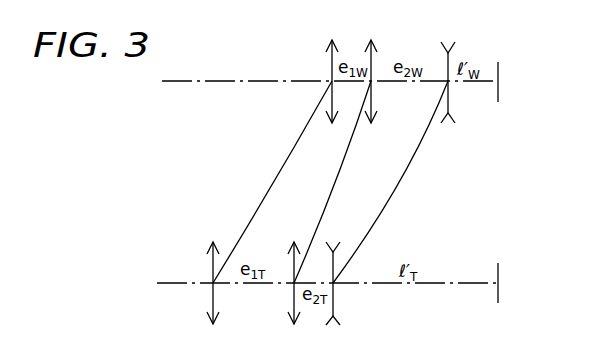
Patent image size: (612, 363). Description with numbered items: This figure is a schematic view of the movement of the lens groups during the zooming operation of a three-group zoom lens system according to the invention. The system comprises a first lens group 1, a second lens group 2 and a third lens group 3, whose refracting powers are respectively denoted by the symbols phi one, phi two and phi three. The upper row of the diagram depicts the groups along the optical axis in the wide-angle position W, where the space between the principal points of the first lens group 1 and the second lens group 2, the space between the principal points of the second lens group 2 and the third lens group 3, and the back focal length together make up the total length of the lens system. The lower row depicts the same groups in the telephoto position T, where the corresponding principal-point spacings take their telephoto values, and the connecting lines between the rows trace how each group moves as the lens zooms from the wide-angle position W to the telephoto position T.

The first lens group 1 is at (275, 172).
The second lens group 2 is at (335, 172).
The third lens group 3 is at (393, 173).
The wide-angle position W is at (342, 82).
The telephoto position T is at (337, 283).